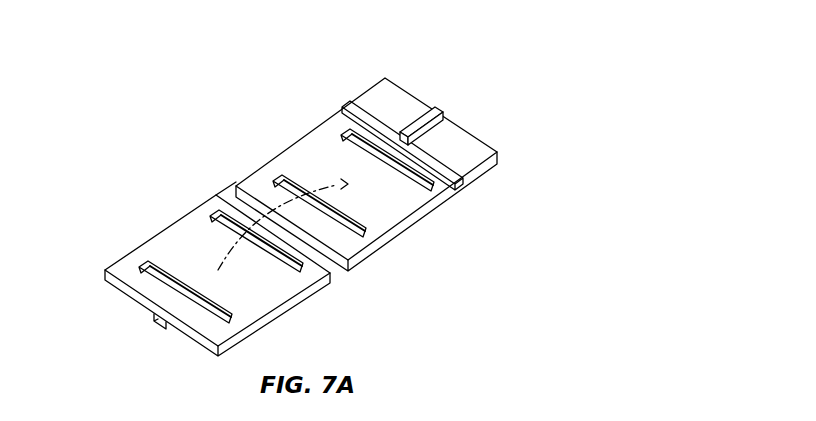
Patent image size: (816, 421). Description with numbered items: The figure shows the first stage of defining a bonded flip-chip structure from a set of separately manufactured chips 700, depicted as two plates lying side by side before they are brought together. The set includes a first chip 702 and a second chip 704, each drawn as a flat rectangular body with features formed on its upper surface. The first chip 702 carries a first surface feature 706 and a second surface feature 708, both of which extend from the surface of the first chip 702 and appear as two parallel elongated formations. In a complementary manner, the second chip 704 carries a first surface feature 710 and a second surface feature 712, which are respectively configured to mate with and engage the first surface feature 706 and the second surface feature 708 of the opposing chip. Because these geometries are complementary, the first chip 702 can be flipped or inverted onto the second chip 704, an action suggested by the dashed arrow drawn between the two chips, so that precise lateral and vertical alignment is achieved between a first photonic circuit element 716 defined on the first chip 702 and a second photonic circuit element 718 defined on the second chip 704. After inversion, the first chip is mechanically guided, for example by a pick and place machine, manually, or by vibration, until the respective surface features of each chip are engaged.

The set of separately manufactured chips 700 is at (127, 86).
The first chip 702 is at (106, 271).
The second chip 704 is at (388, 77).
The first surface feature 706 is at (140, 264).
The second surface feature 708 is at (212, 212).
The first surface feature 710 is at (274, 180).
The second surface feature 712 is at (341, 134).
The first photonic circuit element 716 is at (155, 317).
The second photonic circuit element 718 is at (437, 107).